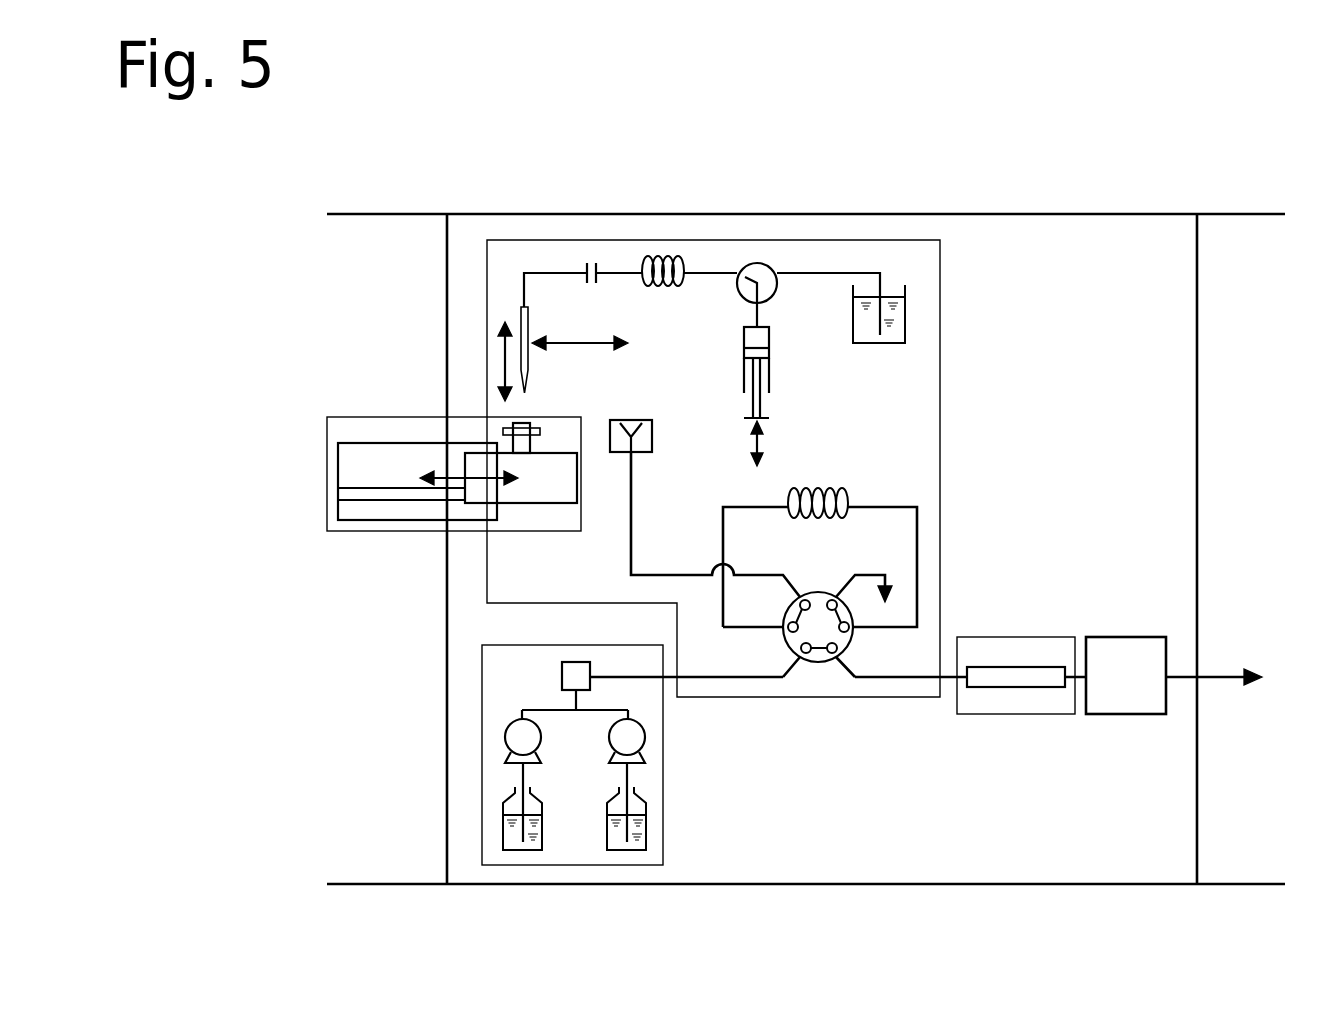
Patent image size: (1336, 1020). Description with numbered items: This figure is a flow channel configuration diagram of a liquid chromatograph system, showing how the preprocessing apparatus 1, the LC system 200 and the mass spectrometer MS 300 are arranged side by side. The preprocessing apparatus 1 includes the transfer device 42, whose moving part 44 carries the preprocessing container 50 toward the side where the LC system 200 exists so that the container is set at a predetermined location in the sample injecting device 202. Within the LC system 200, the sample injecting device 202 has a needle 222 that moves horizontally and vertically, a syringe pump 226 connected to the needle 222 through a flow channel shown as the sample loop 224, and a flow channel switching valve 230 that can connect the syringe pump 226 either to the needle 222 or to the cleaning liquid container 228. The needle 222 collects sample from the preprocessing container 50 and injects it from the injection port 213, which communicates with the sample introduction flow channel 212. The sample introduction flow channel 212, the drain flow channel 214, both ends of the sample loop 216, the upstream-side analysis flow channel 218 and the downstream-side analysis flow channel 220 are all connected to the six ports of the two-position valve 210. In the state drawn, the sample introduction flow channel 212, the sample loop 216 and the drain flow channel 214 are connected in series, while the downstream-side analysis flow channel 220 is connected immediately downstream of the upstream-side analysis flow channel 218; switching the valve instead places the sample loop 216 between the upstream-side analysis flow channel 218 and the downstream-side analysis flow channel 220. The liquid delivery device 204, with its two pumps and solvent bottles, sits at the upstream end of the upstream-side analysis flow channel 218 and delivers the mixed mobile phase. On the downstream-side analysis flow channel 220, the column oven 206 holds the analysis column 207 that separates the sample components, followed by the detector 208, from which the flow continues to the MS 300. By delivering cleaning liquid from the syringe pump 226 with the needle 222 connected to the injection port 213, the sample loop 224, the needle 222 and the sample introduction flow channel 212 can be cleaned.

The preprocessing apparatus 1 is at (381, 213).
The LC system 200 is at (1070, 213).
The mass spectrometer (MS) 300 is at (1236, 213).
The transfer device 42 is at (390, 533).
The moving part 44 is at (528, 504).
The preprocessing container 50 is at (520, 443).
The sample injecting device 202 is at (945, 370).
The liquid delivery device 204 is at (663, 802).
The column oven 206 is at (1017, 637).
The analysis column 207 is at (1015, 688).
The detector 208 is at (1112, 637).
The two-position valve 210 is at (852, 643).
The sample introduction flow channel 212 is at (693, 570).
The injection port 213 is at (657, 428).
The drain flow channel 214 is at (868, 575).
The sample loop 216 is at (823, 487).
The upstream-side analysis flow channel 218 is at (765, 678).
The downstream-side analysis flow channel 220 is at (885, 678).
The needle 222 is at (528, 322).
The sample loop 224 is at (667, 288).
The syringe pump 226 is at (770, 373).
The cleaning liquid container 228 is at (905, 313).
The flow channel switching valve 230 is at (773, 295).